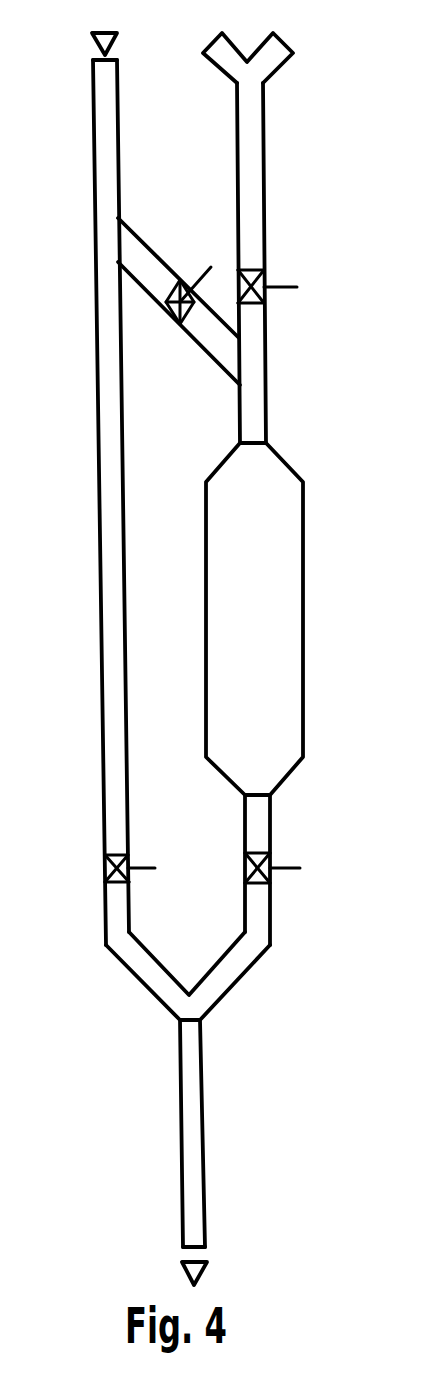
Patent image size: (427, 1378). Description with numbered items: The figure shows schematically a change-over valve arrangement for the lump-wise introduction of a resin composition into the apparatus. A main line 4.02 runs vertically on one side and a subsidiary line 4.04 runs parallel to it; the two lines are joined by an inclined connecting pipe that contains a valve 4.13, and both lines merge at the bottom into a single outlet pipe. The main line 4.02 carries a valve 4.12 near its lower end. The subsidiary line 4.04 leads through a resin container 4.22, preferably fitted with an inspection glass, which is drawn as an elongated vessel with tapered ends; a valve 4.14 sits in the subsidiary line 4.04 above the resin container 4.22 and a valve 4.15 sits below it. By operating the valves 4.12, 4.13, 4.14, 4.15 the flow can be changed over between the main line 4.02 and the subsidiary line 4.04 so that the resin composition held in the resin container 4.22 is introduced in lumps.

The main line 4.02 is at (100, 399).
The subsidiary line 4.04 is at (262, 410).
The valve 4.12 is at (130, 855).
The valve 4.13 is at (178, 280).
The valve 4.14 is at (265, 272).
The valve 4.15 is at (272, 855).
The resin container 4.22 is at (303, 607).